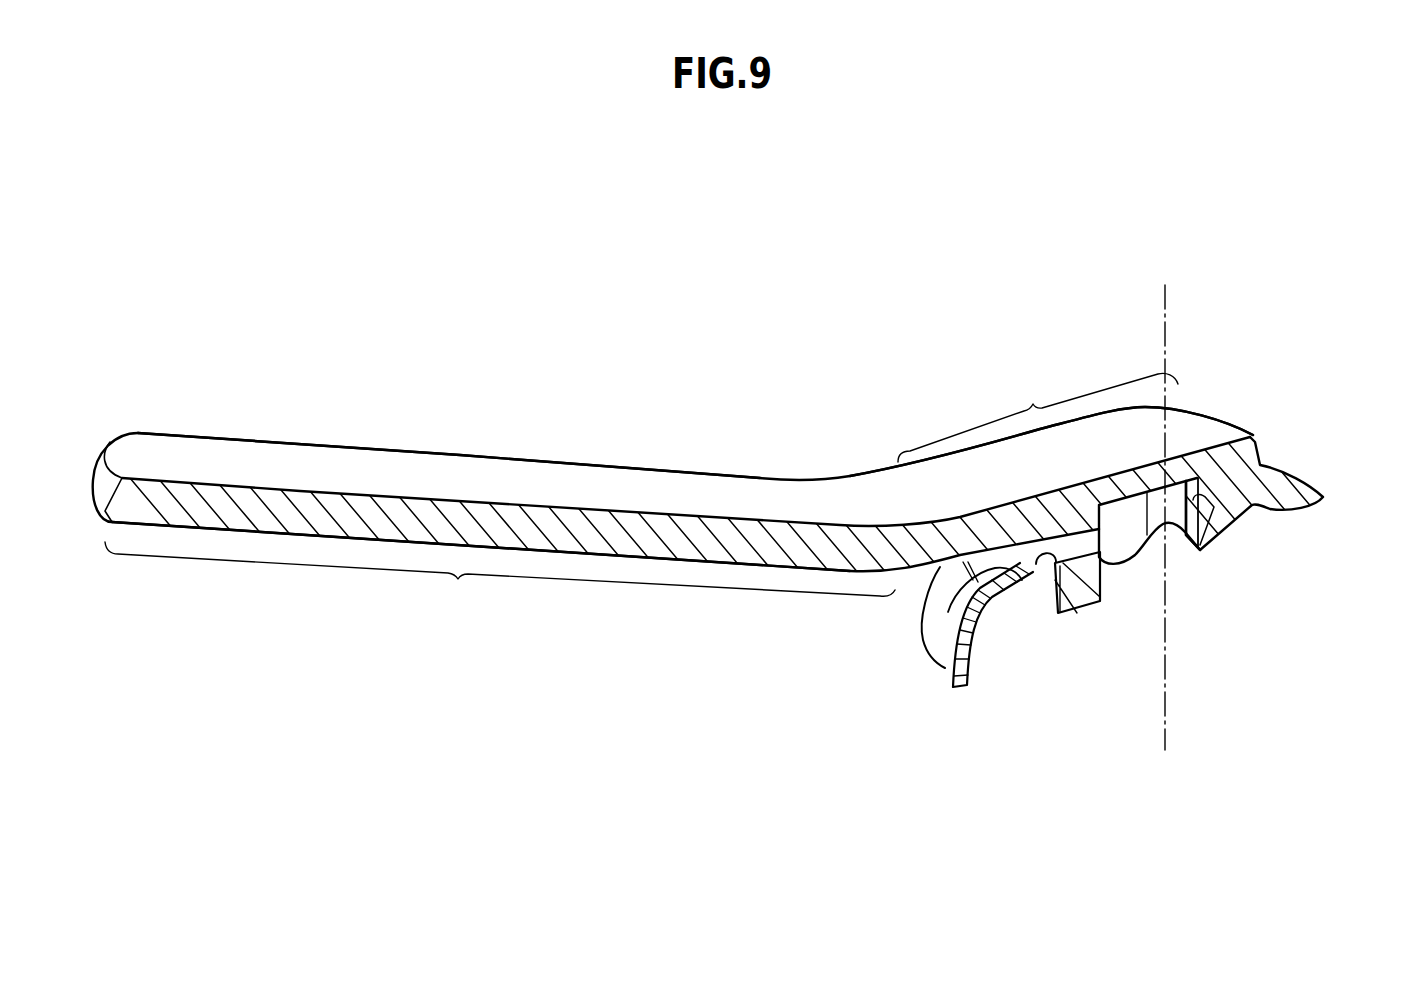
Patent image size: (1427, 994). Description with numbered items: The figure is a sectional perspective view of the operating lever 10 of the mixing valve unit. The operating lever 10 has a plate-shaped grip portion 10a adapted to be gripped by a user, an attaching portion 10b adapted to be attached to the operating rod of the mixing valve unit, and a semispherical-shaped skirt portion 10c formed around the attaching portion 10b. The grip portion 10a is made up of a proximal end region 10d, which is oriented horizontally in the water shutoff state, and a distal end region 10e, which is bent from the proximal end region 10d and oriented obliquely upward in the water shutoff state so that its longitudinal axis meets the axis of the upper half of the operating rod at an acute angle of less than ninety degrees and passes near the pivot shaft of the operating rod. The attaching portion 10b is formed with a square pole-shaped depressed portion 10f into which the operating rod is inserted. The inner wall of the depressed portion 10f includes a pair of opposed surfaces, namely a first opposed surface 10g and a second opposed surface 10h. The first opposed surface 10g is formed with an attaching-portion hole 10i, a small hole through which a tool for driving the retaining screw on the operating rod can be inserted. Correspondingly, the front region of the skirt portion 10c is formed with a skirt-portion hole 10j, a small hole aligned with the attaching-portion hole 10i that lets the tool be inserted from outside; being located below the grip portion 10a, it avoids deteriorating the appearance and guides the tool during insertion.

The operating lever 10 is at (553, 378).
The grip portion 10a is at (659, 473).
The attaching portion 10b is at (1240, 523).
The skirt portion 10c is at (930, 663).
The proximal end region 10d is at (1051, 423).
The distal end region 10e is at (500, 572).
The depressed portion 10f is at (1185, 564).
The first opposed surface 10g is at (1101, 580).
The second opposed surface 10h is at (1190, 545).
The attaching-portion hole 10i is at (1042, 562).
The skirt-portion hole 10j is at (952, 648).